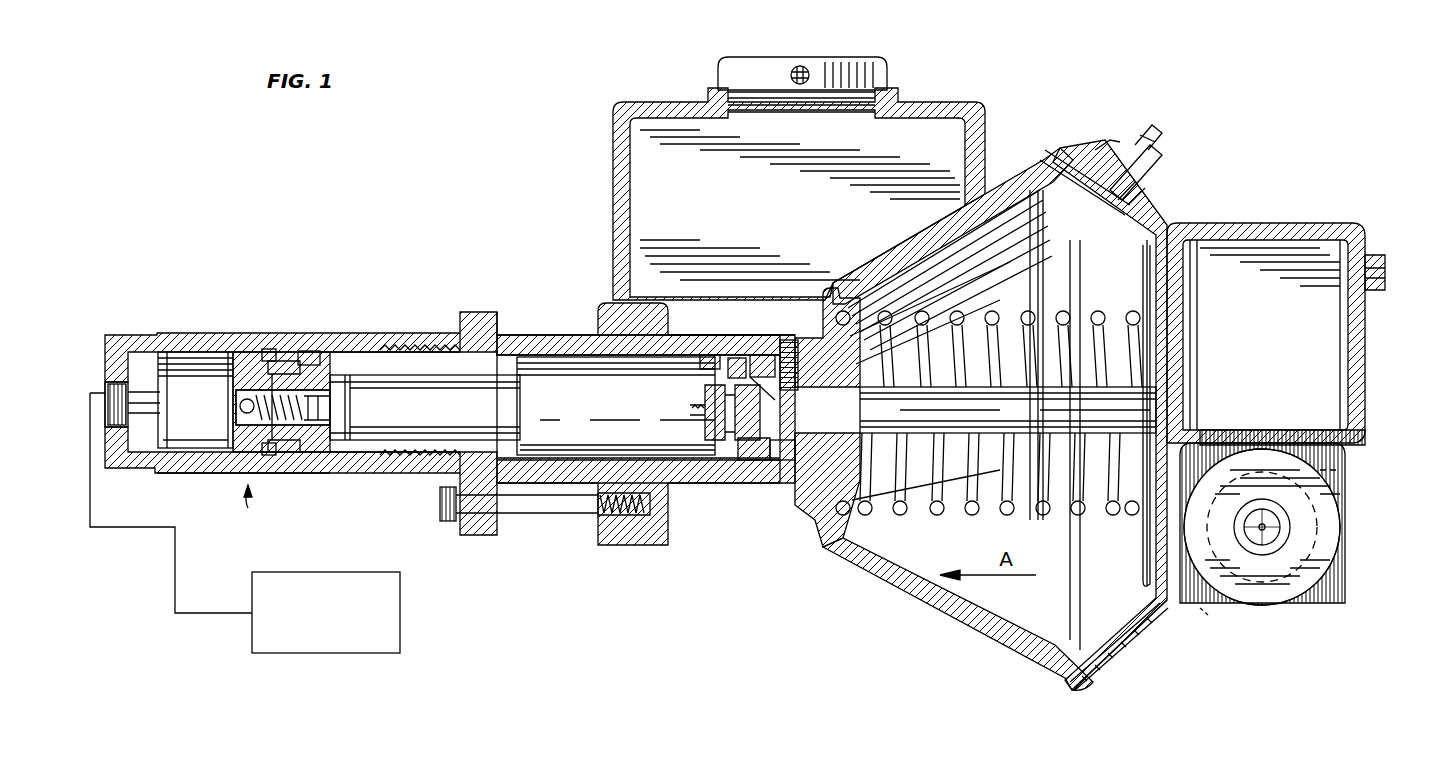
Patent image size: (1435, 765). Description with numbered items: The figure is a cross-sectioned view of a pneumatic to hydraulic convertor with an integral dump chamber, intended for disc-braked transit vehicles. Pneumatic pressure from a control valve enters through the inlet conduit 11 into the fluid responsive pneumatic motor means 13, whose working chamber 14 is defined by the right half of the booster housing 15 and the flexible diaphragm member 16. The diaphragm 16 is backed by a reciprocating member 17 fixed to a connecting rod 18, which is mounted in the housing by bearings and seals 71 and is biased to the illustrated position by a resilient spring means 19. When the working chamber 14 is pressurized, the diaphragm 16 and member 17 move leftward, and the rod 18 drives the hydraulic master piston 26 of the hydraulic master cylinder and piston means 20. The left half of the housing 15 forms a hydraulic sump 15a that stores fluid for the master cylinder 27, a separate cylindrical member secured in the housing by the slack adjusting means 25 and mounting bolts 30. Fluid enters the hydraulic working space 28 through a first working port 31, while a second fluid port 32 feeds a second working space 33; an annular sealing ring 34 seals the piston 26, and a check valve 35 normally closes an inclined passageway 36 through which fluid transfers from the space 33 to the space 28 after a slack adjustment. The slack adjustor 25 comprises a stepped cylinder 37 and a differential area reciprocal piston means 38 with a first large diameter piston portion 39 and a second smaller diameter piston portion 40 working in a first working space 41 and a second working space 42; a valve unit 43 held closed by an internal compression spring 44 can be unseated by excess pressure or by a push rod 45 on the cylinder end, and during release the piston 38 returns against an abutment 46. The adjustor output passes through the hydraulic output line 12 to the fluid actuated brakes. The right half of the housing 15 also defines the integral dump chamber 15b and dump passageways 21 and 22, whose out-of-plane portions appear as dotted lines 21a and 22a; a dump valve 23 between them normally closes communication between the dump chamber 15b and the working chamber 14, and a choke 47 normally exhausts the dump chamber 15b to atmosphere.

The inlet conduit 11 is at (1153, 148).
The hydraulic output line 12 is at (160, 527).
The fluid responsive pneumatic motor means 13 is at (1157, 645).
The working chamber 14 is at (1170, 215).
The booster housing 15 is at (616, 186).
The hydraulic sump 15a is at (786, 204).
The integral dump chamber 15b is at (1273, 337).
The flexible diaphragm member 16 is at (1112, 615).
The reciprocating member 17 is at (1143, 262).
The connecting rod 18 is at (963, 417).
The resilient spring means 19 is at (920, 496).
The hydraulic master cylinder and piston means 20 is at (697, 512).
The dump passageway 21 is at (1240, 440).
The dotted-line portion of dump passageway 21a is at (1342, 468).
The dump passageway 22 is at (1168, 608).
The dotted-line portion of dump passageway 22a is at (1210, 610).
The dump valve 23 is at (1333, 538).
The slack adjusting means 25 is at (243, 501).
The hydraulic master piston 26 is at (748, 462).
The hydraulic master cylinder 27 is at (545, 342).
The hydraulic working space 28 is at (534, 432).
The mounting bolts 30 is at (518, 508).
The first working port 31 is at (703, 352).
The second fluid port 32 is at (778, 345).
The second working space 33 is at (785, 467).
The annular sealing ring 34 is at (752, 352).
The check valve 35 is at (700, 410).
The passageway 36 is at (737, 355).
The stepped cylinder 37 is at (272, 345).
The differential area reciprocal piston means 38 is at (308, 366).
The first large diameter piston portion 39 is at (372, 437).
The second smaller diameter piston portion 40 is at (222, 470).
The first working space 41 is at (443, 428).
The second working space 42 is at (176, 439).
The valve unit 43 is at (243, 392).
The internal compression spring 44 is at (283, 462).
The push rod 45 is at (118, 462).
The abutment 46 is at (388, 352).
The choke 47 is at (1384, 272).
The bearings and seals 71 is at (863, 519).